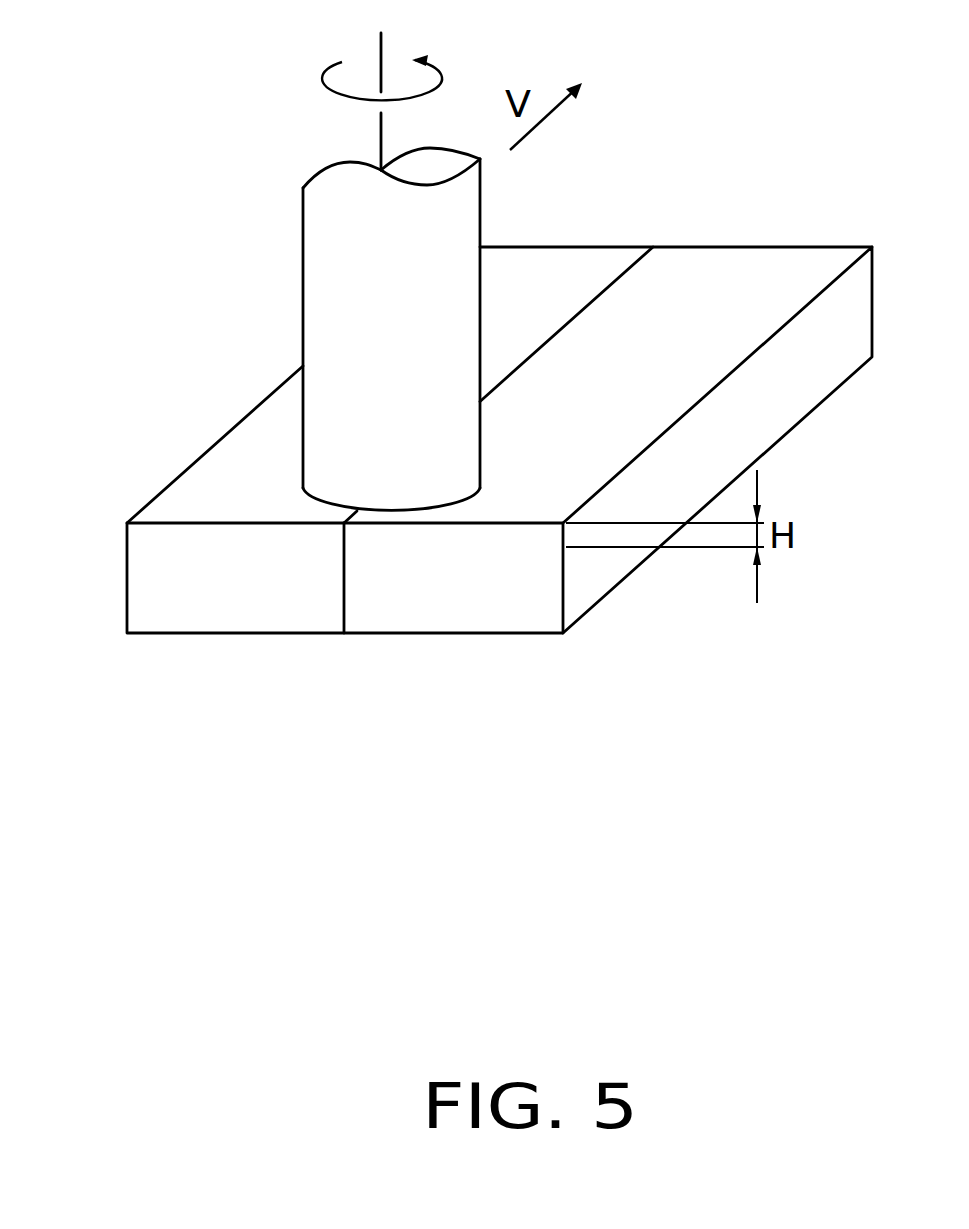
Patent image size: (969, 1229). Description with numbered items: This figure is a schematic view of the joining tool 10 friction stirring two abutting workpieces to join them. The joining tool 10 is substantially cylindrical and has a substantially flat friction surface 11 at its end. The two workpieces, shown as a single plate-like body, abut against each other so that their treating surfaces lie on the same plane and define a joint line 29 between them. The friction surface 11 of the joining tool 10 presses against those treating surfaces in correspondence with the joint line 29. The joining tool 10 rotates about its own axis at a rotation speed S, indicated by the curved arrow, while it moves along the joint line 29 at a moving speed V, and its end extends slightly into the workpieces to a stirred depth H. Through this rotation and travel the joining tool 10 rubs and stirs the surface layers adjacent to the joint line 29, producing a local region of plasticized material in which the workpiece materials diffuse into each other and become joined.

The joining tool 10 is at (327, 398).
The friction surface 11 is at (317, 508).
The joint line 29 is at (618, 278).